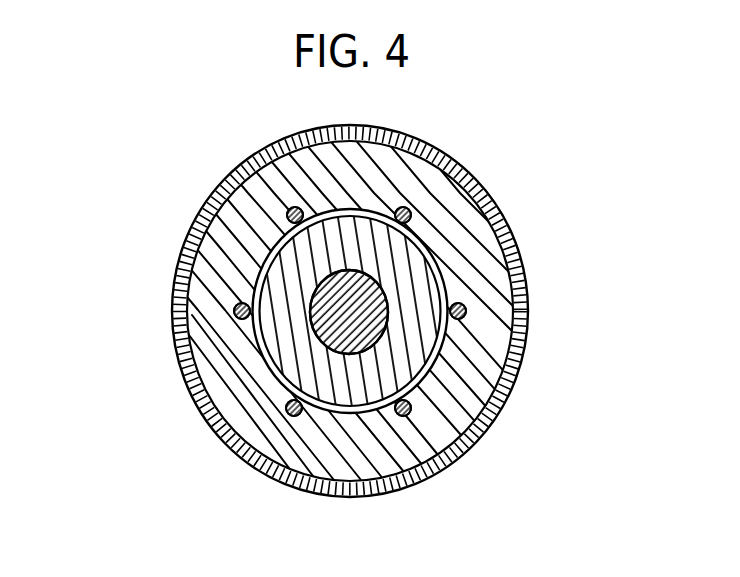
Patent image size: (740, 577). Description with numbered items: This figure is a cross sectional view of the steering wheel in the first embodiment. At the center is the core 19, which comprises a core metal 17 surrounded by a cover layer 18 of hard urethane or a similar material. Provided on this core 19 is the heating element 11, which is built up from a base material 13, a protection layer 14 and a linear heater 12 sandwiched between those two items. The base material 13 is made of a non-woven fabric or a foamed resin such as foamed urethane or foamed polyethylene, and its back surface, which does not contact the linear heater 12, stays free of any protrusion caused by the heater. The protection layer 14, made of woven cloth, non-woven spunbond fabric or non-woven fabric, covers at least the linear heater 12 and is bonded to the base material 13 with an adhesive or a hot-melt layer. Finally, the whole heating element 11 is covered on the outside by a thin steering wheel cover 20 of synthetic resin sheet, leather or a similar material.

The heating element 11 is at (439, 286).
The linear heater 12 is at (466, 311).
The base material 13 is at (473, 365).
The protection layer 14 is at (443, 268).
The core metal 17 is at (337, 310).
The cover layer 18 is at (300, 363).
The core 19 is at (236, 311).
The steering wheel cover 20 is at (432, 463).